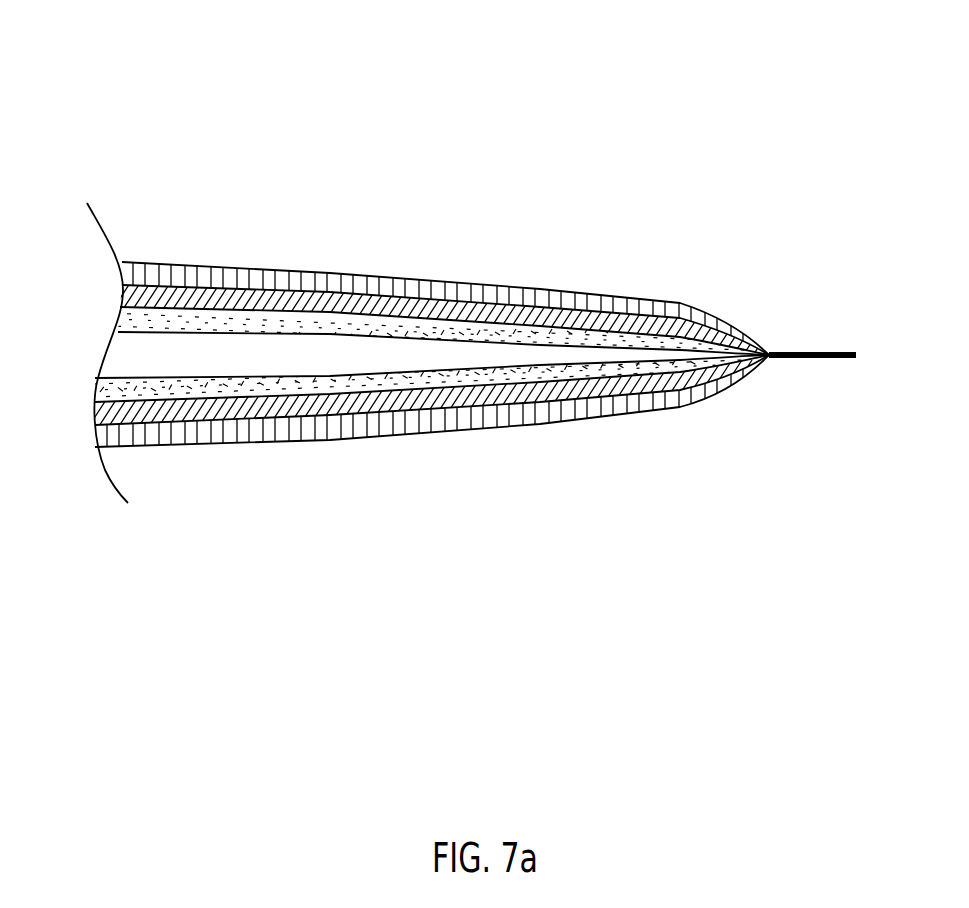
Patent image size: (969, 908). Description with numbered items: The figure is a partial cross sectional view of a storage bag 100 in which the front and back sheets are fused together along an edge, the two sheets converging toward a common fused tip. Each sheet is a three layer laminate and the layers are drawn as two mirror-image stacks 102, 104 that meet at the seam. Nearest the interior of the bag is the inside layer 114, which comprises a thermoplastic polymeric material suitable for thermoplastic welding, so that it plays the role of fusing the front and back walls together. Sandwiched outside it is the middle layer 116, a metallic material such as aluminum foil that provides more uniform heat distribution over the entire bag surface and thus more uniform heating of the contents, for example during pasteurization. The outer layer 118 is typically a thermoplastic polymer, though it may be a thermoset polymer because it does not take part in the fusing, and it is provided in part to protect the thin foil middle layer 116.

The storage bag 100 is at (158, 180).
The first arm 102 is at (569, 283).
The second arm 104 is at (568, 426).
The inside layer 114 is at (368, 325).
The middle layer 116 is at (298, 298).
The outer layer 118 is at (228, 271).